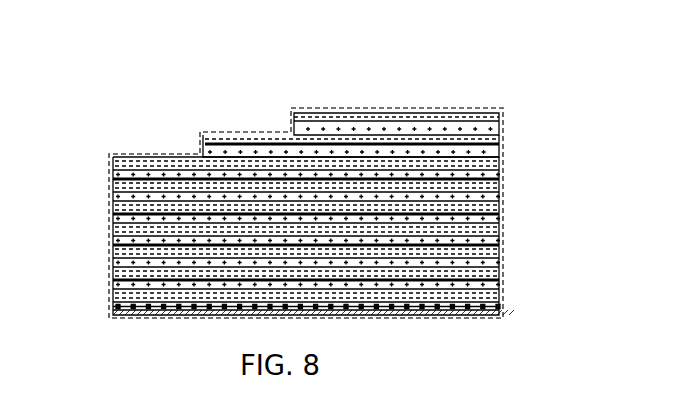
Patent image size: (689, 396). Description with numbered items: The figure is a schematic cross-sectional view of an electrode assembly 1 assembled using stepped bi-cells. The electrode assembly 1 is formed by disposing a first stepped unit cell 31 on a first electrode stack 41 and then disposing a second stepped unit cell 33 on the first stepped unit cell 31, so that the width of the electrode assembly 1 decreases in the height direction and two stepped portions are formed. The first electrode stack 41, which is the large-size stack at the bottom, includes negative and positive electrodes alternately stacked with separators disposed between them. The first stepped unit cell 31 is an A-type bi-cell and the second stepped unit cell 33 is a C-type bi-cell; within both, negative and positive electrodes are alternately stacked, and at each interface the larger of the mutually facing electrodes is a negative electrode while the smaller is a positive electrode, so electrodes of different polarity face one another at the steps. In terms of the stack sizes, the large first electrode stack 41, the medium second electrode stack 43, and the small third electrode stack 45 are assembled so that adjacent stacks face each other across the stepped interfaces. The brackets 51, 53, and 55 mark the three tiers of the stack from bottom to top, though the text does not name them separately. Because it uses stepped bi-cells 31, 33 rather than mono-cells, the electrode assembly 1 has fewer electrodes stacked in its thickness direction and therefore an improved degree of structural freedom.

The electrode assembly 1 is at (128, 33).
The first stacked body 51 is at (303, 230).
The second stacked body 53 is at (268, 136).
The third stacked body 55 is at (304, 127).
The first electrode stack 41 is at (295, 247).
The second electrode stack 43 is at (107, 150).
The third electrode stack 45 is at (351, 146).
The second stepped unit cell 33 is at (506, 112).
The first stepped unit cell 31 is at (506, 146).